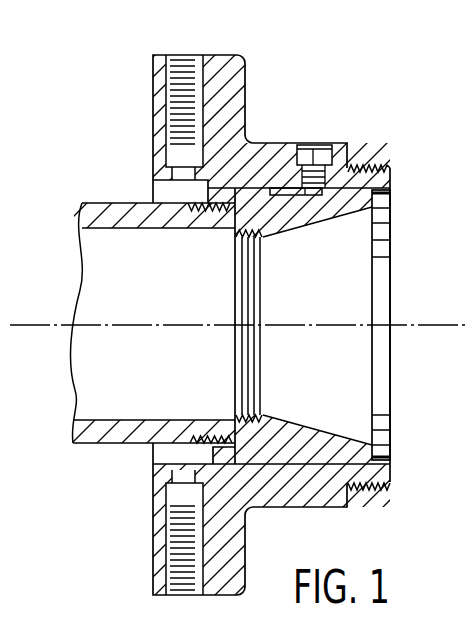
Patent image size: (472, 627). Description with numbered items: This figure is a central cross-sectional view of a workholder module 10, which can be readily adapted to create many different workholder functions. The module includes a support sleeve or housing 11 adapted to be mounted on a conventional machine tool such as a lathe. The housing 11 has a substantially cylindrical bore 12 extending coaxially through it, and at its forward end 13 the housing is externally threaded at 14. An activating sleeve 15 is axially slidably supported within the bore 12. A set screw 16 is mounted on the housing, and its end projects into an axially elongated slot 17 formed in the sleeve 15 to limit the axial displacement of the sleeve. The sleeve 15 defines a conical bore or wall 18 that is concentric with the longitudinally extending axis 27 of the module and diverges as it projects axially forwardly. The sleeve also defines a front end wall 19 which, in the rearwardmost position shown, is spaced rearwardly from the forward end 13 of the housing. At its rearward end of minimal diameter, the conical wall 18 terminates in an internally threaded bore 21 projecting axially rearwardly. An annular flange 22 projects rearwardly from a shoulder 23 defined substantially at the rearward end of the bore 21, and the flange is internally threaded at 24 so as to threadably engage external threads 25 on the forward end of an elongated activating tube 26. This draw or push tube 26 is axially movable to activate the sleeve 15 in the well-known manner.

The workholder module 10 is at (309, 81).
The support sleeve or housing 11 is at (281, 512).
The cylindrical bore 12 is at (314, 464).
The forward end 13 is at (384, 192).
The external threads 14 is at (362, 168).
The activating sleeve 15 is at (341, 423).
The set screw 16 is at (309, 144).
The axially elongated slot 17 is at (283, 193).
The conical bore or wall 18 is at (283, 420).
The front end wall 19 is at (388, 454).
The internally threaded bore 21 is at (250, 247).
The annular flange 22 is at (217, 462).
The shoulder 23 is at (233, 440).
The internal threads 24 is at (207, 440).
The external threads 25 is at (197, 202).
The activating tube 26 is at (128, 220).
The longitudinally extending axis 27 is at (47, 330).